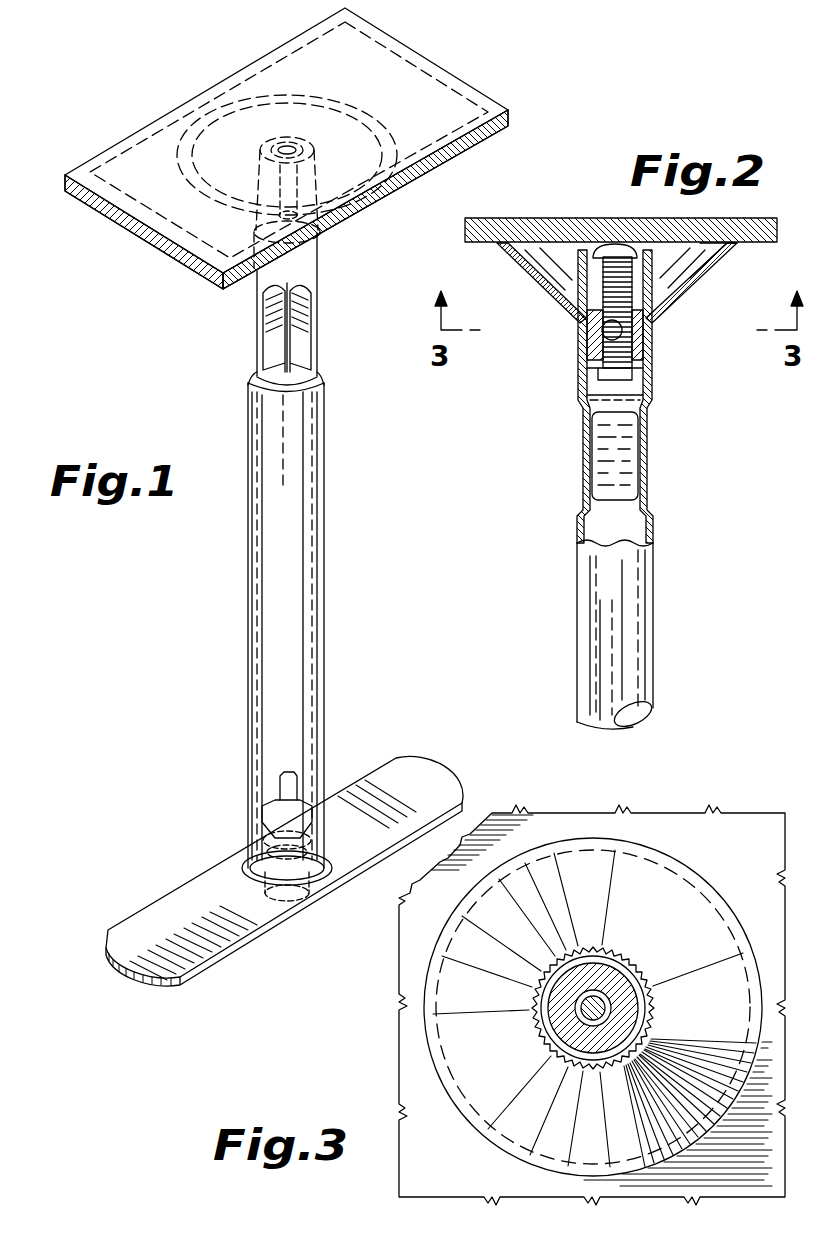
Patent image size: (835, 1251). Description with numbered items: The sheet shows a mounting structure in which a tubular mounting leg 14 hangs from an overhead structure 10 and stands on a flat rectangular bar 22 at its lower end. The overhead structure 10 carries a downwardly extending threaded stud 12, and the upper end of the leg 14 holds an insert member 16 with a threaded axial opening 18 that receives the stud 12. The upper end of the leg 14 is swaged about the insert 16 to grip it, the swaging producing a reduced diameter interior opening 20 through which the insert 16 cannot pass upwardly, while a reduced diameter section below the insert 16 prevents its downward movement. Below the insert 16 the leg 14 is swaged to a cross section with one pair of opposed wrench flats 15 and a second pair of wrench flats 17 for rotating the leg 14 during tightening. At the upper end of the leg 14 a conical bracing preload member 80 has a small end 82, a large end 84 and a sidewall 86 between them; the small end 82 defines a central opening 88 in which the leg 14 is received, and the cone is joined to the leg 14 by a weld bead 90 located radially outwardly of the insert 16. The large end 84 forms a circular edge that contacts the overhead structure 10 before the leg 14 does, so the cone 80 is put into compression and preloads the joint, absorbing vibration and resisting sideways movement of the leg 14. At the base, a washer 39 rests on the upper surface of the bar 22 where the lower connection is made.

In FIG. 1, the overhead structure 10 is at (185, 236).
In FIG. 2, the overhead structure 10 is at (468, 245).
In FIG. 3, the overhead structure 10 is at (400, 1070).
In FIG. 2, the threaded stud 12 is at (617, 372).
In FIG. 3, the threaded stud 12 is at (611, 1006).
In FIG. 1, the mounting leg 14 is at (328, 566).
In FIG. 2, the mounting leg 14 is at (572, 617).
In FIG. 3, the mounting leg 14 is at (620, 965).
In FIG. 1, the wrench flats 15 is at (268, 330).
In FIG. 2, the wrench flats 15 is at (583, 456).
In FIG. 2, the insert member 16 is at (640, 346).
In FIG. 3, the insert member 16 is at (584, 968).
In FIG. 1, the second pair of wrench flats 17 is at (312, 330).
In FIG. 2, the second pair of wrench flats 17 is at (615, 478).
In FIG. 2, the threaded axial opening 18 is at (620, 366).
In FIG. 2, the reduced diameter interior opening 20 is at (600, 268).
In FIG. 1, the flat rectangular bar 22 is at (163, 962).
In FIG. 1, the washer 39 is at (242, 870).
In FIG. 2, the bracing preload member 80 is at (690, 300).
In FIG. 3, the bracing preload member 80 is at (453, 1014).
In FIG. 2, the small end 82 is at (645, 330).
In FIG. 2, the large end 84 is at (733, 247).
In FIG. 2, the sidewall 86 is at (704, 272).
In FIG. 3, the central opening 88 is at (556, 1002).
In FIG. 2, the weld bead 90 is at (612, 326).
In FIG. 3, the weld bead 90 is at (562, 1040).